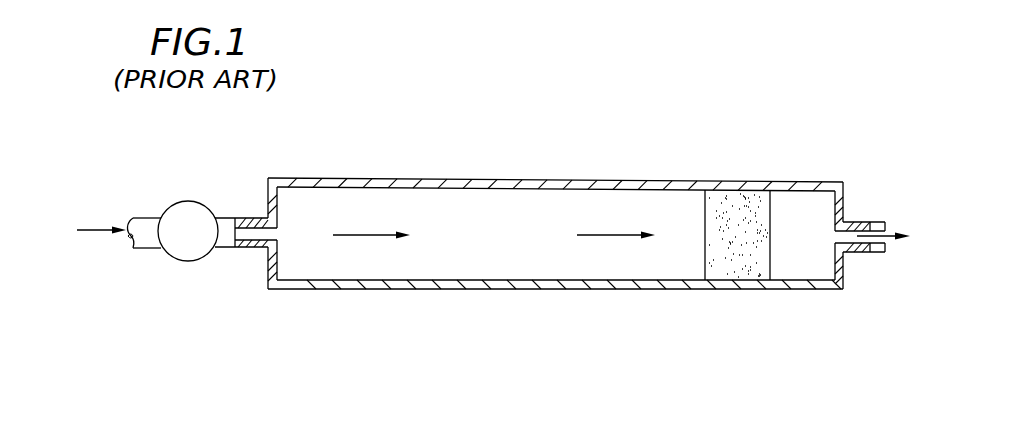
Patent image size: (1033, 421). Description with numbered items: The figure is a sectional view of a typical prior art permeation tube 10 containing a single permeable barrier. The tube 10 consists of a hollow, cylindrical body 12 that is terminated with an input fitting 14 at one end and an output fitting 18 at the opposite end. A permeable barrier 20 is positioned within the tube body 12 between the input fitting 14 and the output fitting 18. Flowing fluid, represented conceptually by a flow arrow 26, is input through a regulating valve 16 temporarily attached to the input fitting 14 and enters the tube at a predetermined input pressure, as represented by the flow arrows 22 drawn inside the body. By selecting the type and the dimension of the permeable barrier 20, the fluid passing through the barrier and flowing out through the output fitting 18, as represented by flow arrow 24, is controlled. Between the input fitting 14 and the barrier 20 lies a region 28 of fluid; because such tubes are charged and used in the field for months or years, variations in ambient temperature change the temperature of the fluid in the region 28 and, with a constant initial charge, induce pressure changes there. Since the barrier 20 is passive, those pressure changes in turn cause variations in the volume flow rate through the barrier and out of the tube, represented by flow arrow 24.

The permeation tube 10 is at (690, 148).
The hollow, cylindrical body 12 is at (475, 179).
The input fitting 14 is at (245, 248).
The regulating valve 16 is at (188, 200).
The output fitting 18 is at (868, 222).
The permeable barrier 20 is at (738, 253).
The flow arrows 22 is at (363, 235).
The flow arrow 24 is at (898, 243).
The flow arrow 26 is at (93, 230).
The region 28 is at (511, 249).